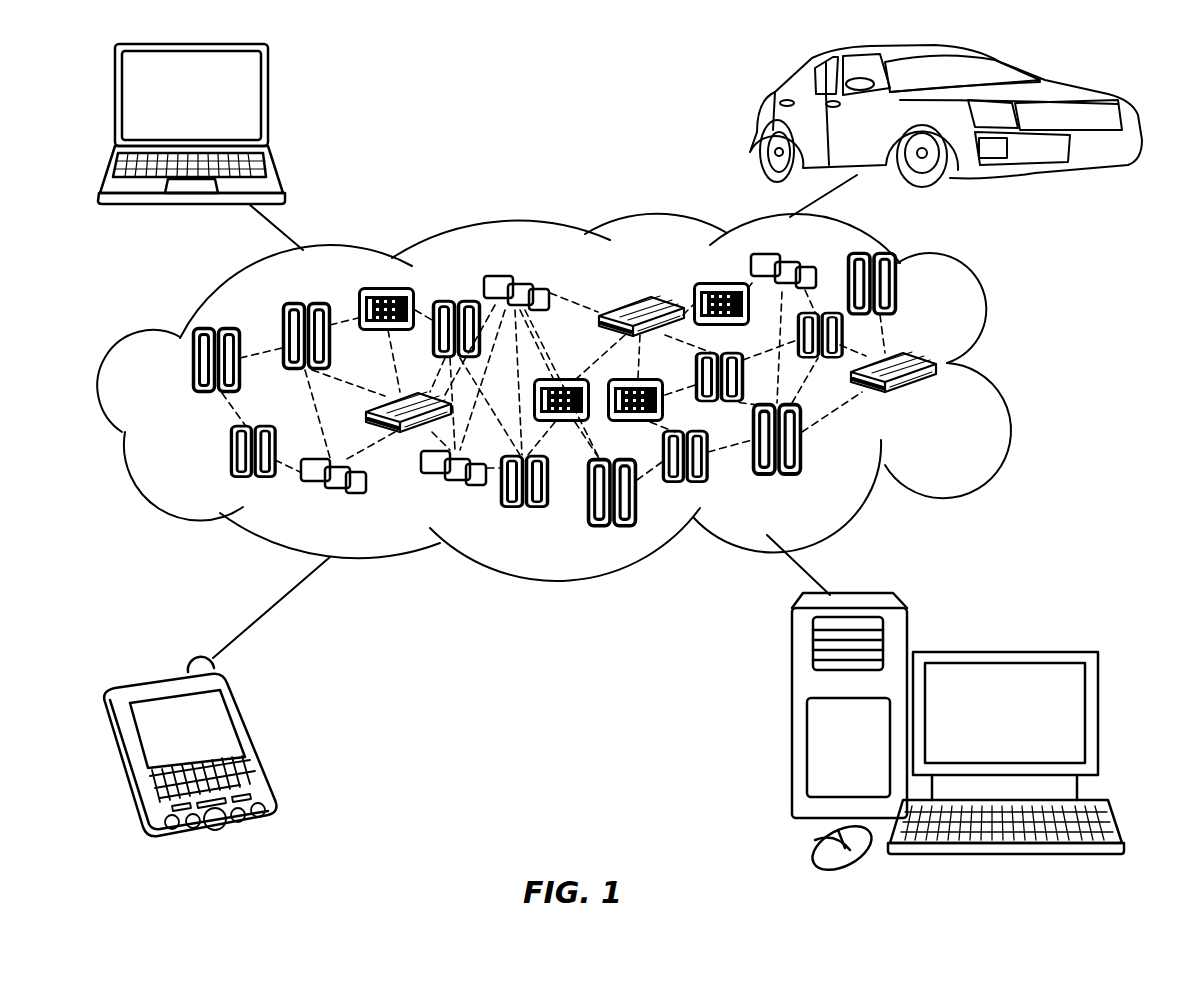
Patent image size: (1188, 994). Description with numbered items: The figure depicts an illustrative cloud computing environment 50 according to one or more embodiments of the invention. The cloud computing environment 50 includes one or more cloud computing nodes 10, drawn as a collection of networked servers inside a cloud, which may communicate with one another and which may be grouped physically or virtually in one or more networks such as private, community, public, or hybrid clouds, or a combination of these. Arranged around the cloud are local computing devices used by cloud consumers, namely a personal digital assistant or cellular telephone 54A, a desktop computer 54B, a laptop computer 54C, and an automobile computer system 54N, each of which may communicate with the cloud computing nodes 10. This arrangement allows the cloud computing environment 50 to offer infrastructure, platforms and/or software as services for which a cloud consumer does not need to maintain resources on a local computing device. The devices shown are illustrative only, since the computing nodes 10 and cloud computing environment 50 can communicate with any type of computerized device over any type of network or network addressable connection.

The cloud computing nodes 10 is at (943, 399).
The cloud computing environment 50 is at (1001, 371).
The personal digital assistant (PDA) or cellular telephone 54A is at (263, 741).
The desktop computer 54B is at (1002, 651).
The laptop computer 54C is at (270, 104).
The automobile computer system 54N is at (756, 118).